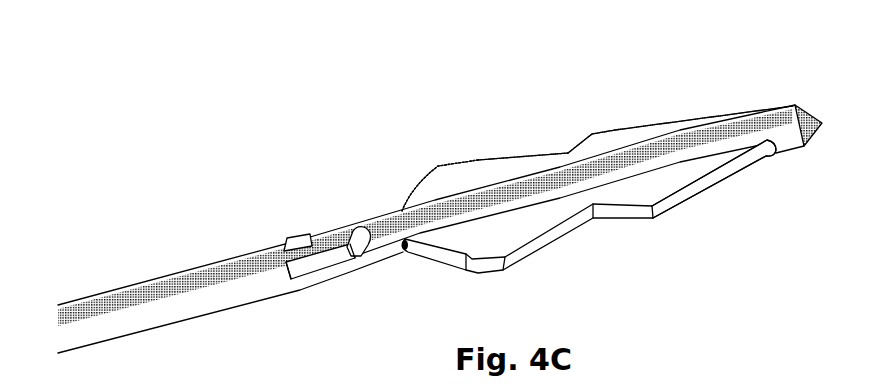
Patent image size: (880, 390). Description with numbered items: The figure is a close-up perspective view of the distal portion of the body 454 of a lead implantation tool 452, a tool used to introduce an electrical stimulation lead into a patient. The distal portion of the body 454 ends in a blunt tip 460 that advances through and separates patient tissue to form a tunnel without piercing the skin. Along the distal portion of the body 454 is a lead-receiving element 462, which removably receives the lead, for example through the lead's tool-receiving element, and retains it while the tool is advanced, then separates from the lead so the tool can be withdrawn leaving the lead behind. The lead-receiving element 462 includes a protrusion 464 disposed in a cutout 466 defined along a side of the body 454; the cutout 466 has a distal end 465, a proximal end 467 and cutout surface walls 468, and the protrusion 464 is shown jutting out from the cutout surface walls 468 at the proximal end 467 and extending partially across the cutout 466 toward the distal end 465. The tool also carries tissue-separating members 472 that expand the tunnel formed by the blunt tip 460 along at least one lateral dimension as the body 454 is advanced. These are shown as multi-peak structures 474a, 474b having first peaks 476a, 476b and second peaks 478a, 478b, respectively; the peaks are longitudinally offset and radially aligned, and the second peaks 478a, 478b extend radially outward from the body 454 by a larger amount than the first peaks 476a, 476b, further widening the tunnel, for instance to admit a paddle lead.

The lead implantation tool 452 is at (371, 98).
The body 454 is at (172, 277).
The blunt tip 460 is at (806, 118).
The lead-receiving element 462 is at (333, 260).
The protrusion 464 is at (304, 236).
The distal end 465 is at (351, 266).
The cutout 466 is at (330, 246).
The proximal end 467 is at (298, 288).
The cutout surface walls 468 is at (352, 236).
The tissue-separating members 472 is at (782, 207).
The multi-peak structure 474a is at (735, 77).
The multi-peak structure 474b is at (749, 187).
The first peak 476a is at (650, 137).
The first peak 476b is at (630, 195).
The second peak 478a is at (450, 180).
The second peak 478b is at (525, 225).